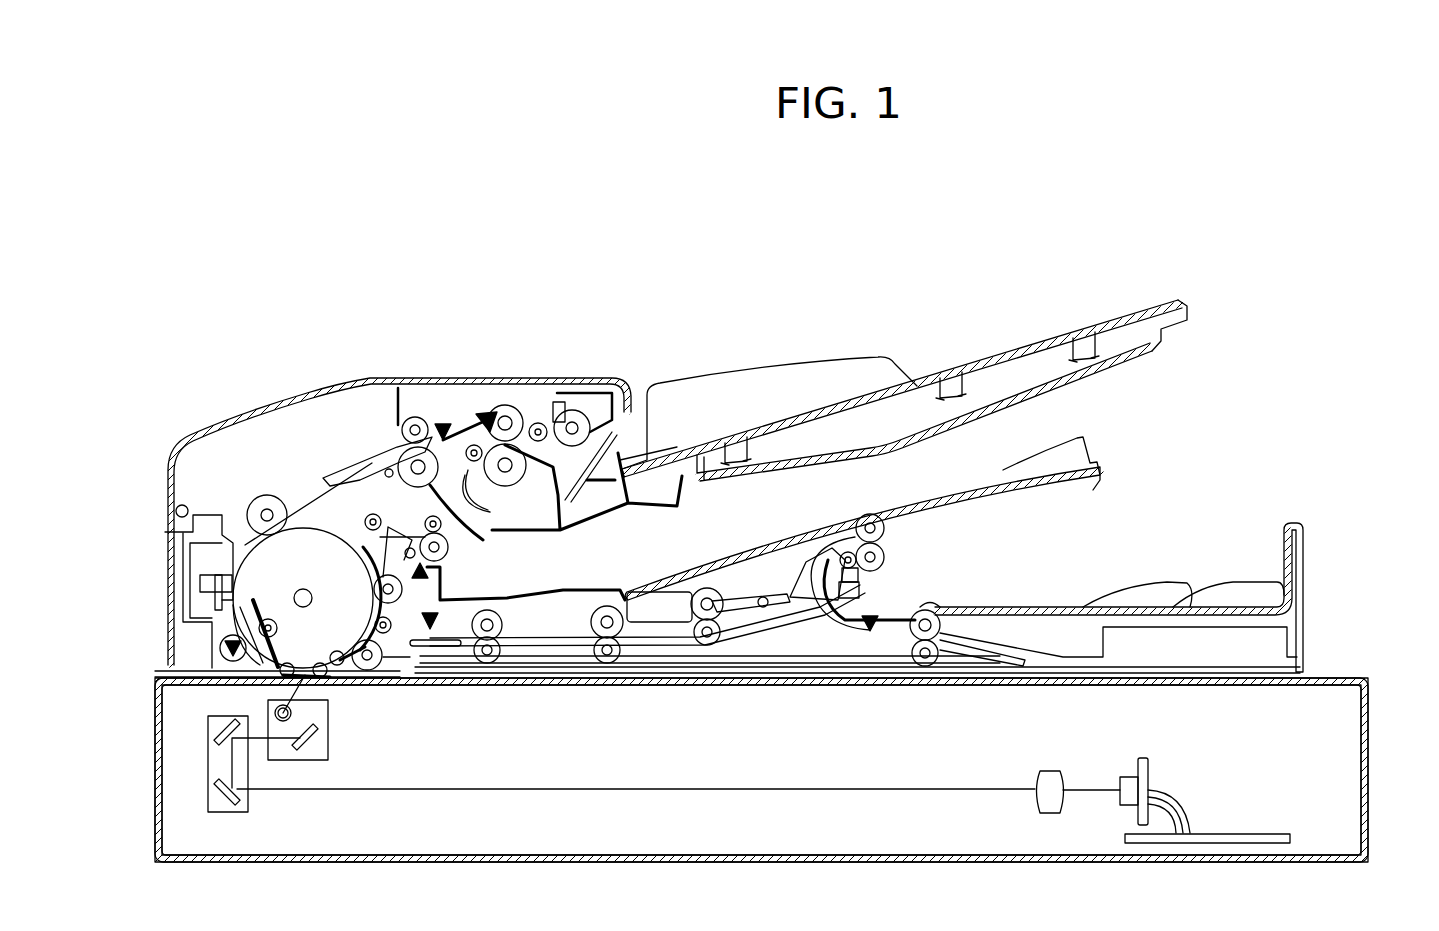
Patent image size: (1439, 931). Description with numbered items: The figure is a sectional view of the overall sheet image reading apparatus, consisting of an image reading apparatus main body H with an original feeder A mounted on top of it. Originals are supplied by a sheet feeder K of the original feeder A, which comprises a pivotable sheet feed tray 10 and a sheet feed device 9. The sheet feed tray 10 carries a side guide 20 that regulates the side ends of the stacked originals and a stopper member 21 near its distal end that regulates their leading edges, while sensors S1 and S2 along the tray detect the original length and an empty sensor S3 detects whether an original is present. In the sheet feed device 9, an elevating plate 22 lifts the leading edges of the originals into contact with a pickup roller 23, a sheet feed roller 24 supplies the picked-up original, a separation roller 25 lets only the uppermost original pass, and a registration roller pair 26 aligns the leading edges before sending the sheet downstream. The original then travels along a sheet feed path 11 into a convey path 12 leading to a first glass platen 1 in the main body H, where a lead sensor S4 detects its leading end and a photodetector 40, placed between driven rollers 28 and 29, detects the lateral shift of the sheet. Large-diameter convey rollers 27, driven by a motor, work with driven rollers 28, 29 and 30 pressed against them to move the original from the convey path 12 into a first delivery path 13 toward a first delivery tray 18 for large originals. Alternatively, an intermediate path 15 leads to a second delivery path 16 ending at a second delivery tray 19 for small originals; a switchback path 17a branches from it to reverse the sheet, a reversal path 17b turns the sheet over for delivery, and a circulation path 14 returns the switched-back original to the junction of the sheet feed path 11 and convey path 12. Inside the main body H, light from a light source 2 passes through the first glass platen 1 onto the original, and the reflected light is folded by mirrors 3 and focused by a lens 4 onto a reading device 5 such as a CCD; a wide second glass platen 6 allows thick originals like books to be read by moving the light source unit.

The first glass platen 1 is at (305, 680).
The light source 2 is at (268, 700).
The mirrors 3 is at (222, 735).
The lens 4 is at (1050, 770).
The reading device 5 is at (1145, 758).
The second glass platen 6 is at (762, 690).
The sheet feed device 9 is at (540, 307).
The sheet feed tray 10 is at (1018, 345).
The sheet feed path 11 is at (387, 470).
The convey path 12 is at (200, 590).
The first delivery path 13 is at (450, 565).
The circulation path 14 is at (332, 527).
The intermediate path 15 is at (657, 625).
The second delivery path 16 is at (812, 570).
The switchback path 17a is at (893, 640).
The reversal path 17b is at (882, 588).
The first delivery tray 18 is at (703, 575).
The second delivery tray 19 is at (1082, 605).
The side guide 20 is at (788, 370).
The stopper member 21 is at (550, 478).
The elevating plate 22 is at (585, 498).
The pickup roller 23 is at (605, 437).
The sheet feed roller 24 is at (512, 410).
The separation roller 25 is at (475, 472).
The registration roller pair 26 is at (418, 418).
The convey rollers 27 is at (303, 510).
The driven roller 28 is at (262, 500).
The driven roller 29 is at (220, 645).
The driven roller 30 is at (403, 660).
The photodetector 40 is at (222, 562).
The sensor S1 is at (948, 376).
The sensor S2 is at (1083, 333).
The empty sensor S3 is at (568, 497).
The lead sensor S4 is at (230, 668).
The sheet feeder K is at (693, 463).
The image reading apparatus main body H is at (1372, 730).
The original feeder A is at (1277, 424).